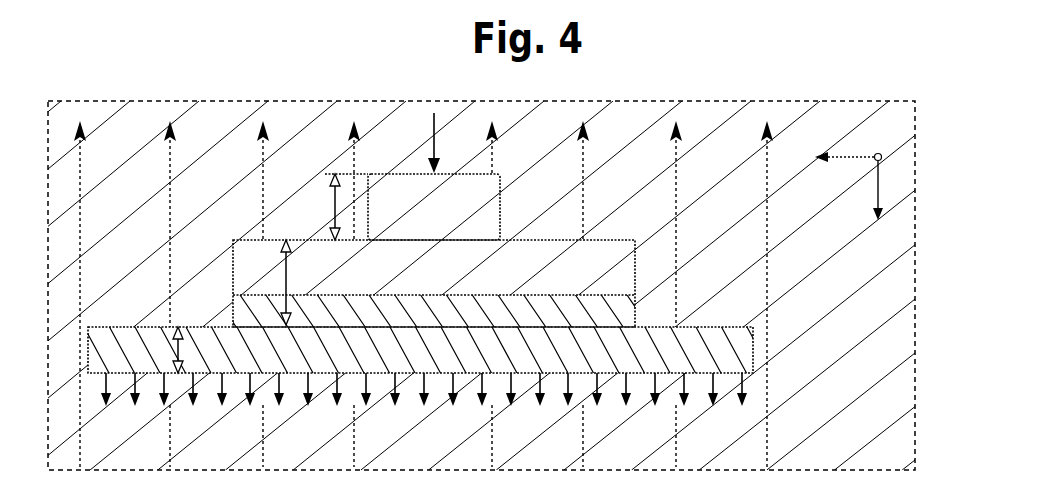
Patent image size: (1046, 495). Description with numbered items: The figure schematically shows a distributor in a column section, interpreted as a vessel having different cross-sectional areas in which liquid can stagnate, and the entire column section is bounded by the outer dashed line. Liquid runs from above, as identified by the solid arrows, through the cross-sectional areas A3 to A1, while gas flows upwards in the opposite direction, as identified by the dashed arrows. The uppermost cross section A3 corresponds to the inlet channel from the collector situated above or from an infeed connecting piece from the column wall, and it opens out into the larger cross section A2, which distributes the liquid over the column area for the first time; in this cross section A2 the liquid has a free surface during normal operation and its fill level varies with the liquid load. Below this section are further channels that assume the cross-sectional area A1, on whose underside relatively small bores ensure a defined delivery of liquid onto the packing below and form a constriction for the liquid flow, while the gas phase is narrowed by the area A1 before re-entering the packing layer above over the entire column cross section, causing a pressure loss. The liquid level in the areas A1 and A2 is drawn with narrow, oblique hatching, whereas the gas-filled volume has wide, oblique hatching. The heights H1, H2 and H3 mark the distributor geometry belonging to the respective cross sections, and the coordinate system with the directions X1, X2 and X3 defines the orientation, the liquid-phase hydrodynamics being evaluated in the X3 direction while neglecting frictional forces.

The cross-sectional area A1 is at (428, 350).
The cross-sectional area A2 is at (431, 283).
The cross-sectional area A3 is at (434, 207).
The height H1 is at (157, 350).
The height H2 is at (265, 282).
The height H3 is at (331, 207).
The x1 direction X1 is at (891, 161).
The x2 direction X2 is at (839, 147).
The x3 direction X3 is at (875, 204).